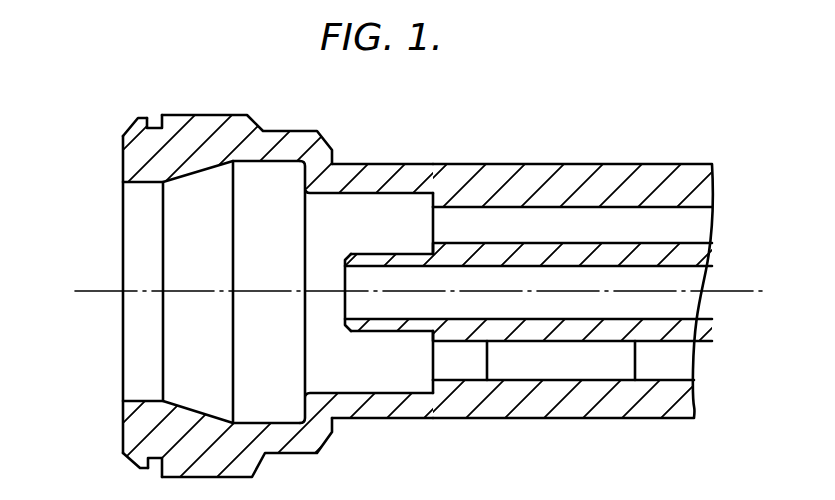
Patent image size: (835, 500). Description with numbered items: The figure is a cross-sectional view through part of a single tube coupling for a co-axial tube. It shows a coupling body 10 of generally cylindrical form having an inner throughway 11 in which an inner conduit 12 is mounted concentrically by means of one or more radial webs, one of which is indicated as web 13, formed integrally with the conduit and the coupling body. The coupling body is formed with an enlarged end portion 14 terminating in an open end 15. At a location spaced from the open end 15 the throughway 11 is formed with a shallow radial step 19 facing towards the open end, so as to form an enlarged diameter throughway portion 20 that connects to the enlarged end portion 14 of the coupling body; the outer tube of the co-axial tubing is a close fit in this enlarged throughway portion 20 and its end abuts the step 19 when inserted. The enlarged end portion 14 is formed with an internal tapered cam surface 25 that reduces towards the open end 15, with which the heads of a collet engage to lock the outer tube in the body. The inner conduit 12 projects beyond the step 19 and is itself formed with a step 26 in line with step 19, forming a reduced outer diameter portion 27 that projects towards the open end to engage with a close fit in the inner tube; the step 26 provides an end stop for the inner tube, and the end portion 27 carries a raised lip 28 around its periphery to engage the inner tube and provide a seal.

The coupling body 10 is at (548, 172).
The inner throughway 11 is at (627, 215).
The inner conduit 12 is at (703, 255).
The radial web 13 is at (550, 362).
The enlarged end portion 14 is at (197, 130).
The open end 15 is at (128, 197).
The radial step 19 is at (440, 197).
The enlarged diameter throughway portion 20 is at (370, 190).
The internal tapered cam surface 25 is at (192, 172).
The step 26 is at (427, 250).
The reduced outer diameter portion 27 is at (366, 252).
The raised lip 28 is at (345, 255).